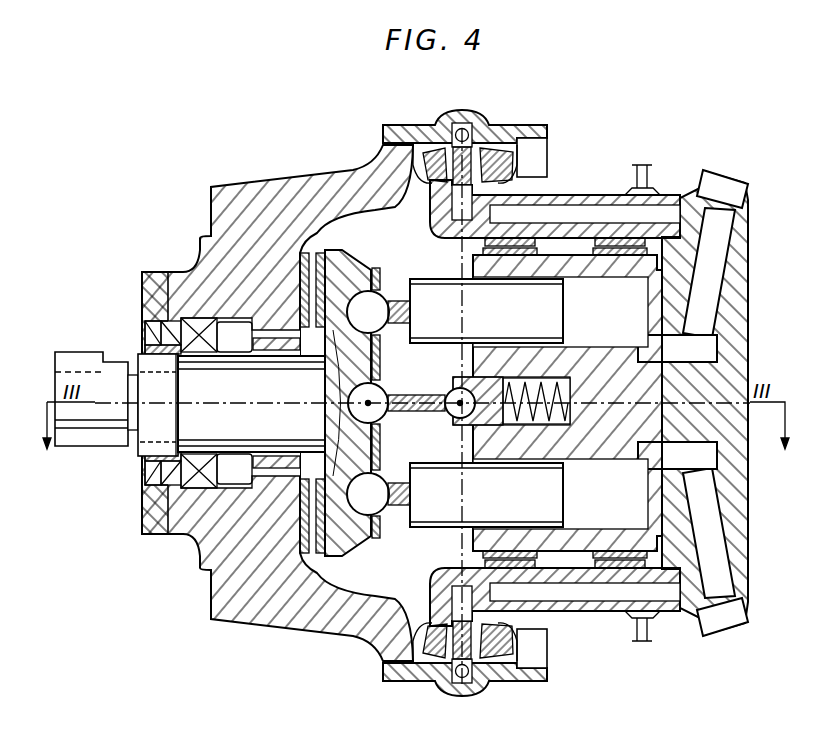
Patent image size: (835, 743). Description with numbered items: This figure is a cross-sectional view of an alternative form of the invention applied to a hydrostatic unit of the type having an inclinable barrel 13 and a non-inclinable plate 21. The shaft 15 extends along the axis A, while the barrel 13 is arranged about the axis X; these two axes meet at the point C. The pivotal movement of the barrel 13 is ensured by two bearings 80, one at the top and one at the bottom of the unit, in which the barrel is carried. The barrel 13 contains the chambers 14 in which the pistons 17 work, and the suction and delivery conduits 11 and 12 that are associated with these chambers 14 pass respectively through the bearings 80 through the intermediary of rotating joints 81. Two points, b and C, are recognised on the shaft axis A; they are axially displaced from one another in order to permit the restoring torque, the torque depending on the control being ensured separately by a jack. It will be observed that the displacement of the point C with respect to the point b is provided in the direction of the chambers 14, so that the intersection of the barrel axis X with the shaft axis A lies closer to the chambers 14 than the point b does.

The shaft 15 is at (110, 367).
The axis of the shaft A is at (228, 398).
The point b' b is at (368, 402).
The point C' C is at (457, 400).
The axis of the barrel X is at (463, 322).
The pistons 17 is at (420, 278).
The chambers 14 is at (620, 318).
The suction and delivery conduit 11 is at (560, 212).
The inclinable barrel 13 is at (560, 555).
The suction and delivery conduit 12 is at (665, 592).
The non-inclinable plate 21 is at (338, 575).
The bearings 80 is at (548, 160).
The rotating joints 81 is at (477, 155).